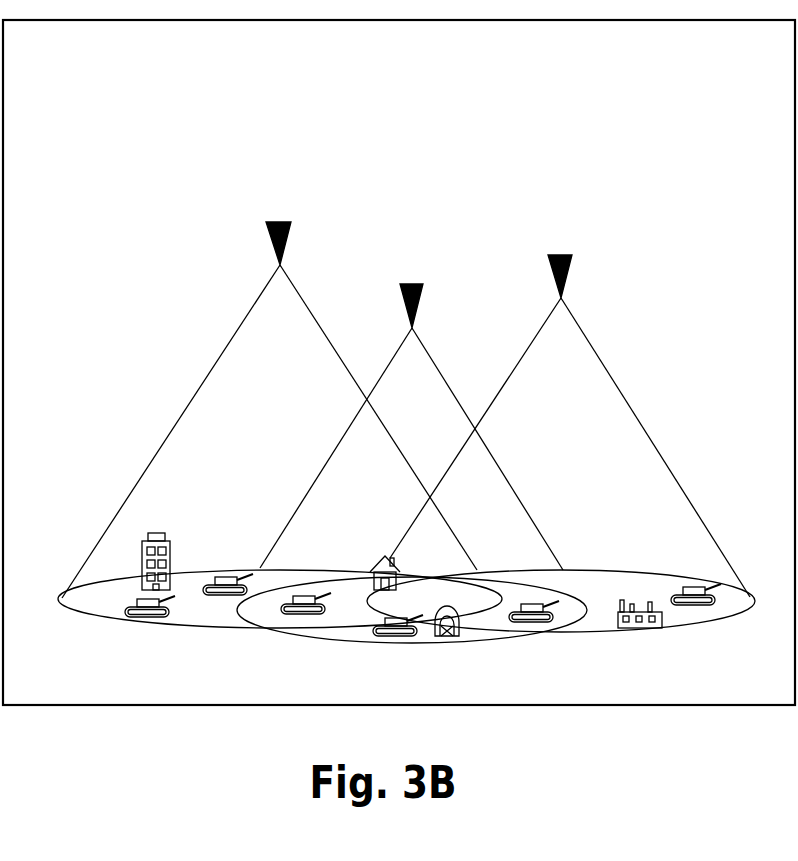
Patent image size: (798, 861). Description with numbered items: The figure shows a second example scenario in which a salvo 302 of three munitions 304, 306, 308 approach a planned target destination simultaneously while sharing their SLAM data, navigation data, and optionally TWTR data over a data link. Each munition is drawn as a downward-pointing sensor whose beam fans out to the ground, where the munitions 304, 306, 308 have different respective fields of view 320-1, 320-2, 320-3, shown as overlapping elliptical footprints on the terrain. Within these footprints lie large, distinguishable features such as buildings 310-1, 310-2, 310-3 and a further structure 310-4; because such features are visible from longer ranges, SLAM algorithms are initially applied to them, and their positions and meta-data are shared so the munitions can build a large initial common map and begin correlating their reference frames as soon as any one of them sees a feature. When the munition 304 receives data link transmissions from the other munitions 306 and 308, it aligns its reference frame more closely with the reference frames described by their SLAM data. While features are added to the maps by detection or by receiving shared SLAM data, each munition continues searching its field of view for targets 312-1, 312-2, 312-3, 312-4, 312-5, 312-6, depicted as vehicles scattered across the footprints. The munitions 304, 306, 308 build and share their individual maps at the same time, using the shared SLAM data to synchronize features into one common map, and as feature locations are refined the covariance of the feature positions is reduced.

The salvo 302 is at (669, 172).
The munition 304 is at (422, 286).
The munition 306 is at (290, 226).
The munition 308 is at (572, 258).
The building 310-1 is at (387, 565).
The building 310-2 is at (455, 638).
The building 310-3 is at (175, 546).
The stationary object (factory) 310-4 is at (647, 607).
The target 312-1 is at (292, 624).
The target 312-2 is at (388, 645).
The target 312-3 is at (540, 606).
The target 312-4 is at (135, 624).
The target 312-5 is at (245, 572).
The target 312-6 is at (697, 612).
The field of view 320-1 is at (428, 646).
The field of view 320-2 is at (204, 632).
The field of view 320-3 is at (607, 633).